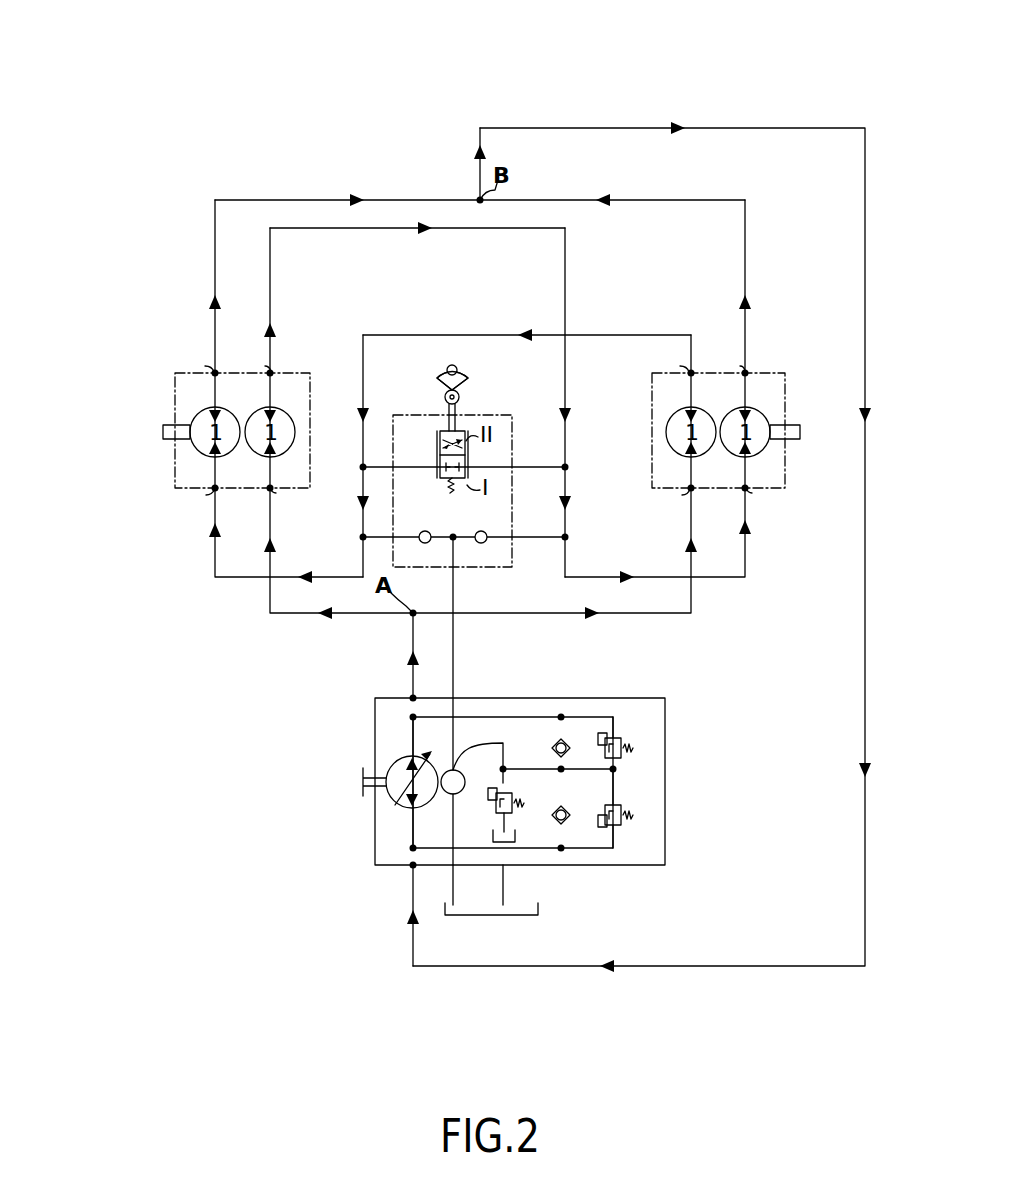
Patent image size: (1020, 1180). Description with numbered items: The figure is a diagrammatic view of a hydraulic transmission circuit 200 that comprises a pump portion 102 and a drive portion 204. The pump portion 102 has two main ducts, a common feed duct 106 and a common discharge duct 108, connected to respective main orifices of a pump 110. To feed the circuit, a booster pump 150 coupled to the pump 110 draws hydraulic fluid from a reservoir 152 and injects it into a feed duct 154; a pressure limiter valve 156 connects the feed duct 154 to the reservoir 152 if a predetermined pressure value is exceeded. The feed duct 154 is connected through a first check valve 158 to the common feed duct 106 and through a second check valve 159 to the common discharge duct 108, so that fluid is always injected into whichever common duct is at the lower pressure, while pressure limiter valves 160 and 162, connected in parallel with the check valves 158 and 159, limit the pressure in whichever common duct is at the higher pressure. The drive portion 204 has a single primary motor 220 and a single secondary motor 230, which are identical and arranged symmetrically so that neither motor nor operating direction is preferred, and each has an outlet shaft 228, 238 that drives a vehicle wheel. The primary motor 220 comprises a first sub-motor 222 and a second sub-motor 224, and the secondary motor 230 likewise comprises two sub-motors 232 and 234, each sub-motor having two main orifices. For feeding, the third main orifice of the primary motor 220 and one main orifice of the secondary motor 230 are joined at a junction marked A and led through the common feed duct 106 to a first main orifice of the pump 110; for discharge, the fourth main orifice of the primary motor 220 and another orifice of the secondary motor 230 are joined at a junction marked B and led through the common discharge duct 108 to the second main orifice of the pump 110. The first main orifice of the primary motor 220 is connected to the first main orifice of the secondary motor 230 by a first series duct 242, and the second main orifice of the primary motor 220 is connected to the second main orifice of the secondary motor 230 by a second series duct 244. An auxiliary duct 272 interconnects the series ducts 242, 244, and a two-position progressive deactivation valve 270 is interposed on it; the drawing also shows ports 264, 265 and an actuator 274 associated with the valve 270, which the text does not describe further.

The hydraulic transmission circuit 200 is at (300, 97).
The pump portion 102 is at (521, 864).
The common feed duct 106 is at (412, 636).
The common discharge duct 108 is at (413, 946).
The pump 110 is at (395, 795).
The booster pump 150 is at (470, 748).
The reservoir 152 is at (490, 916).
The feed duct 154 is at (454, 648).
The pressure limiter valve 156 is at (510, 820).
The first check valve 158 is at (567, 740).
The second check valve 159 is at (566, 826).
The pressure limiter valve 160 is at (622, 746).
The pressure limiter valve 162 is at (622, 815).
The drive portion 204 is at (140, 522).
The primary motor 220 is at (238, 395).
The first sub-motor 222 is at (286, 420).
The second sub-motor 224 is at (194, 450).
The outlet shaft 228 is at (165, 433).
The secondary motor 230 is at (725, 395).
The sub-motor 232 is at (670, 420).
The sub-motor 234 is at (766, 450).
The outlet shaft 238 is at (800, 432).
The first series duct 242 is at (488, 228).
The second series duct 244 is at (440, 335).
The port 264 is at (483, 547).
The port 265 is at (425, 547).
The progressive deactivation valve 270 is at (438, 446).
The auxiliary duct 272 is at (545, 468).
The valve actuator 274 is at (463, 378).